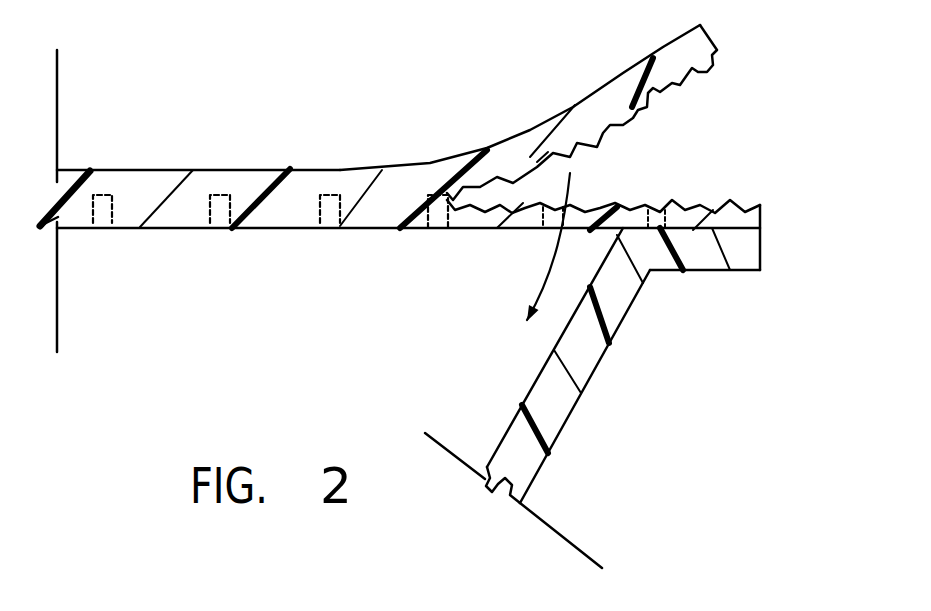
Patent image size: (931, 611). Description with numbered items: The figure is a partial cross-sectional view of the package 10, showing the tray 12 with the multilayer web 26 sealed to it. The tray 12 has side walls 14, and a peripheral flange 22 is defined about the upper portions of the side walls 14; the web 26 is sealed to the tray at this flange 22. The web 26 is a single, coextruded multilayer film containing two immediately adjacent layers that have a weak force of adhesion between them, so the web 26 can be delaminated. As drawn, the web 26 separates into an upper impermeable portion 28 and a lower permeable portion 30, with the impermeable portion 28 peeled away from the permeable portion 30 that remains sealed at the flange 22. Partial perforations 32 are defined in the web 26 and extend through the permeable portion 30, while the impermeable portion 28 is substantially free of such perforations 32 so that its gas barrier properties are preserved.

The package 10 is at (290, 114).
The tray 12 is at (599, 472).
The side walls 14 is at (553, 427).
The peripheral flange 22 is at (683, 272).
The multilayer web 26 is at (190, 193).
The upper impermeable portion 28 is at (603, 98).
The lower permeable portion 30 is at (708, 203).
The partial perforations 32 is at (215, 228).